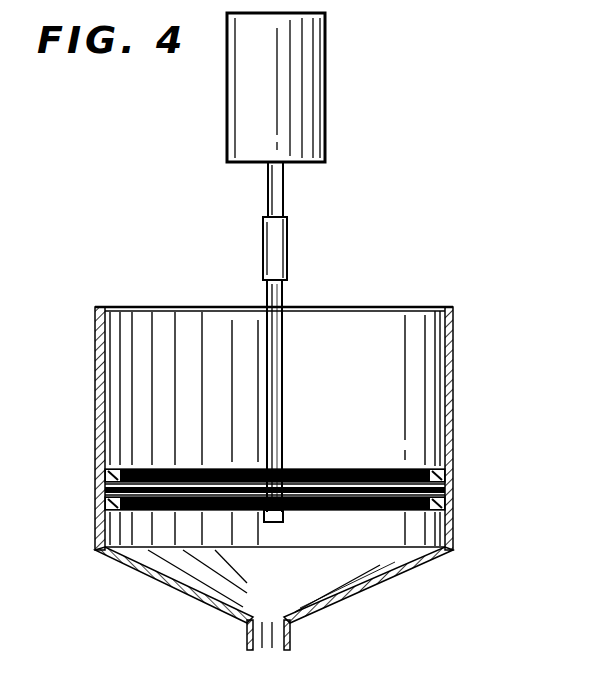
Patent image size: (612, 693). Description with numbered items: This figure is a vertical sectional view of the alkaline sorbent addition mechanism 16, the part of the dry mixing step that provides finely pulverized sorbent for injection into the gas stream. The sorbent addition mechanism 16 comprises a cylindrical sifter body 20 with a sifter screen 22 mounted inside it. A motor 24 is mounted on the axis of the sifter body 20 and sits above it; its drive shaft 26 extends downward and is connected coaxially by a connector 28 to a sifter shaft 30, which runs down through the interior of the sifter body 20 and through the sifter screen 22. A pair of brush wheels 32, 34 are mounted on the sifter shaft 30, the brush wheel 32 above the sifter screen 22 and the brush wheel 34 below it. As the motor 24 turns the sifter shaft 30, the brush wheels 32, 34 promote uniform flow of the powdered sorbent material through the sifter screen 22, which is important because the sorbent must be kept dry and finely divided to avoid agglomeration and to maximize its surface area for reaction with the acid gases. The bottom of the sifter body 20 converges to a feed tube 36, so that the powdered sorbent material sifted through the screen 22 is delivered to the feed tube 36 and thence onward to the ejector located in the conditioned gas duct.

The sorbent addition mechanism 16 is at (490, 352).
The cylindrical sifter body 20 is at (453, 425).
The sifter screen 22 is at (450, 492).
The motor 24 is at (317, 130).
The drive shaft 26 is at (285, 193).
The connector 28 is at (289, 243).
The sifter shaft 30 is at (283, 297).
The brush wheel 32 is at (448, 468).
The brush wheel 34 is at (453, 528).
The feed tube 36 is at (290, 641).